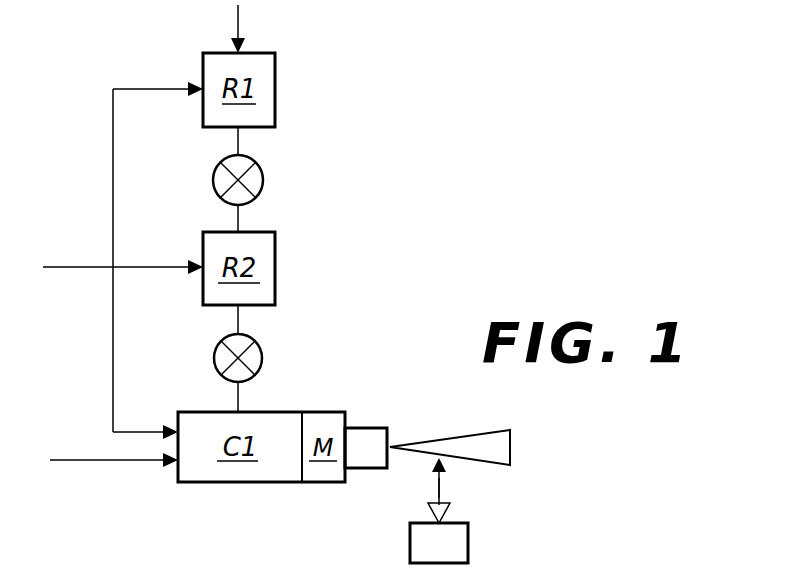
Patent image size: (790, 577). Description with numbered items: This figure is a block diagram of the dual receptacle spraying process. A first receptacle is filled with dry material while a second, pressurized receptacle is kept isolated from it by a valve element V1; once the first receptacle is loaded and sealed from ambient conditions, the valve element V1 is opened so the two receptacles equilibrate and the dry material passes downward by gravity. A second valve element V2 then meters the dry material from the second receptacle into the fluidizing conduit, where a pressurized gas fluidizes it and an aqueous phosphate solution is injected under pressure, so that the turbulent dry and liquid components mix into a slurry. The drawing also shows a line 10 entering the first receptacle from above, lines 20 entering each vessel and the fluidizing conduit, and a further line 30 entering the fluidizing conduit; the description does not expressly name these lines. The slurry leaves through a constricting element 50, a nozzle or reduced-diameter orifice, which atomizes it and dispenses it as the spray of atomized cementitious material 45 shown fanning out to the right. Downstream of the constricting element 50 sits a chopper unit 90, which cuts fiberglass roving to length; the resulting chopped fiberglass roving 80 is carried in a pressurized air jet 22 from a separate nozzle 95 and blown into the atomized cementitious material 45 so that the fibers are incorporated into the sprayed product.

The feed line 10 is at (238, 23).
The input lines 20 is at (150, 88).
The input line to controller 30 is at (89, 459).
The pressurized air jet 22 is at (438, 492).
The atomized cementitious material 45 is at (503, 444).
The constricting element 50 is at (378, 459).
The chopped fiberglass roving 80 is at (440, 486).
The chopper unit 90 is at (451, 554).
The separate nozzle 95 is at (448, 514).
The valve element V1 is at (262, 181).
The valve element V2 is at (262, 358).